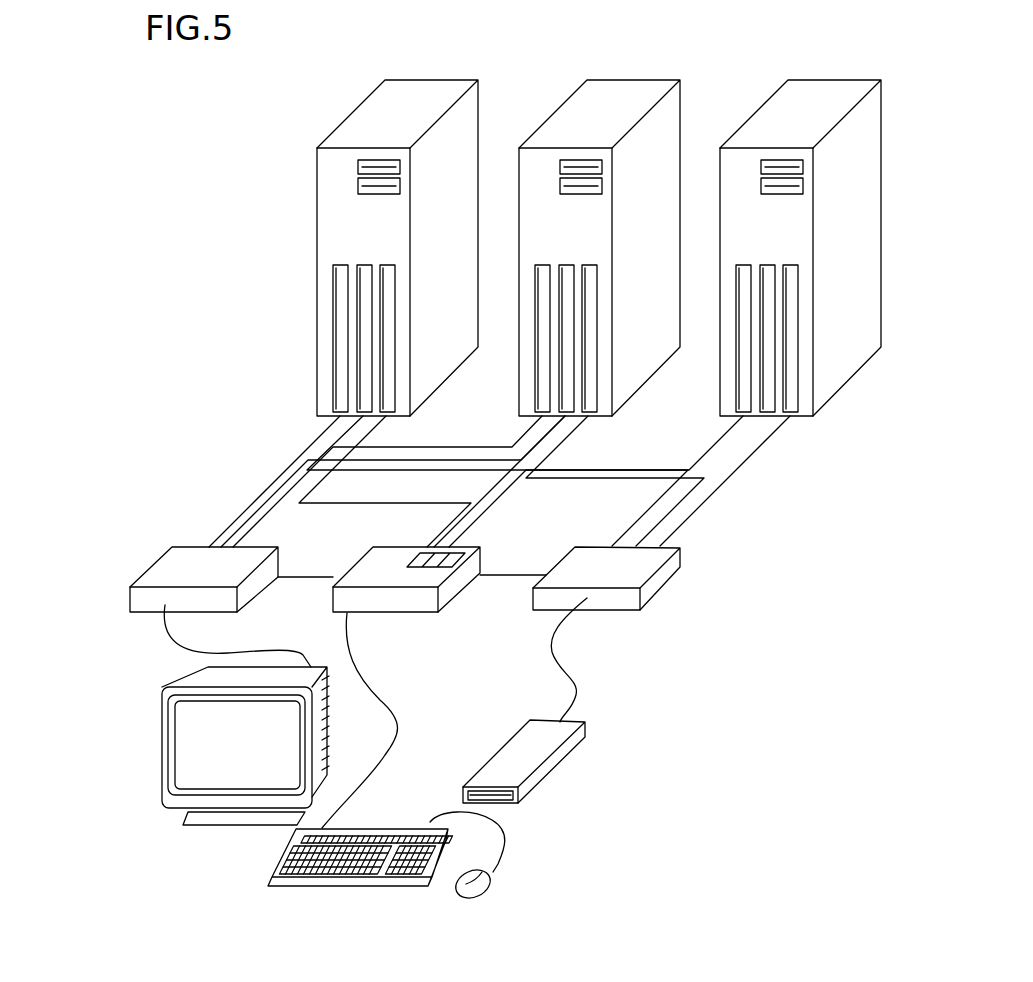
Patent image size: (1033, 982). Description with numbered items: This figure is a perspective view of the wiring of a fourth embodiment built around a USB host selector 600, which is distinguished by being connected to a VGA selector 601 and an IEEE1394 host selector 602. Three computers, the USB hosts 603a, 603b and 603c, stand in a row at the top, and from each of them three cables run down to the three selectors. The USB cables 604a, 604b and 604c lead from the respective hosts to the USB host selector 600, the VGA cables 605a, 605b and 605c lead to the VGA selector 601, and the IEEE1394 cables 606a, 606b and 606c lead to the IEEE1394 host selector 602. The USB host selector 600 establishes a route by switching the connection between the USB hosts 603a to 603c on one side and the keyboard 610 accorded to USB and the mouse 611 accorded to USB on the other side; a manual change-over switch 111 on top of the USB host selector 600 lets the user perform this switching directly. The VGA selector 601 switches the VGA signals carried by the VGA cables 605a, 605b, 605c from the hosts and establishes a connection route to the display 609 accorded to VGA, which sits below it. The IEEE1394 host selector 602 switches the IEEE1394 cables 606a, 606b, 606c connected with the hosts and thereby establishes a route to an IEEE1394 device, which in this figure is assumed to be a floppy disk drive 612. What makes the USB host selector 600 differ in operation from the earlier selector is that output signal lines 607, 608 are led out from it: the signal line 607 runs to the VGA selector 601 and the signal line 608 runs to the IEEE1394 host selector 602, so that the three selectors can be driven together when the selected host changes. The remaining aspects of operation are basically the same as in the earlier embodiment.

The USB host selector 600 is at (387, 598).
The VGA selector 601 is at (182, 598).
The IEEE1394 host selector 602 is at (617, 610).
The USB host 603a is at (427, 78).
The USB host 603b is at (629, 78).
The USB host 603c is at (829, 78).
The USB cable 604a is at (430, 544).
The USB cable 604b is at (540, 516).
The USB cable 604c is at (478, 520).
The VGA cable 605a is at (212, 534).
The VGA cable 605b is at (255, 504).
The VGA cable 605c is at (300, 472).
The IEEE1394 cable 606a is at (698, 542).
The IEEE1394 cable 606b is at (700, 514).
The IEEE1394 cable 606c is at (752, 470).
The output signal line 607 is at (300, 580).
The output signal line 608 is at (498, 580).
The display accorded to VGA 609 is at (205, 828).
The keyboard accorded to USB 610 is at (300, 890).
The mouse accorded to USB 611 is at (490, 894).
The floppy disk drive 612 is at (548, 773).
The manual change-over switch 111 is at (440, 568).